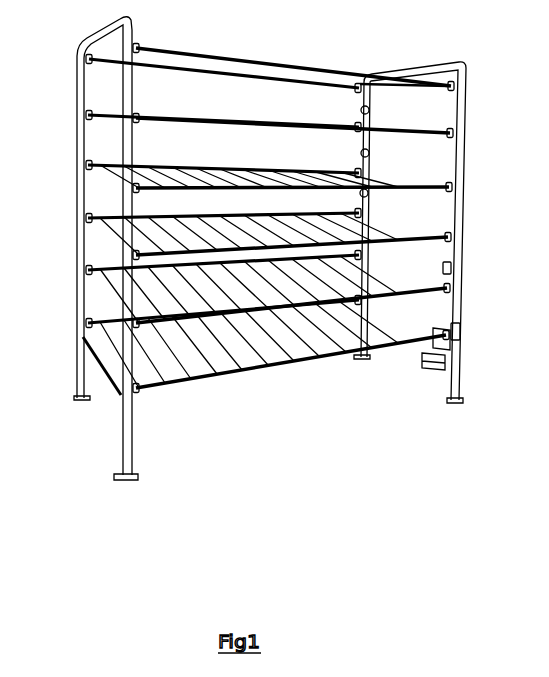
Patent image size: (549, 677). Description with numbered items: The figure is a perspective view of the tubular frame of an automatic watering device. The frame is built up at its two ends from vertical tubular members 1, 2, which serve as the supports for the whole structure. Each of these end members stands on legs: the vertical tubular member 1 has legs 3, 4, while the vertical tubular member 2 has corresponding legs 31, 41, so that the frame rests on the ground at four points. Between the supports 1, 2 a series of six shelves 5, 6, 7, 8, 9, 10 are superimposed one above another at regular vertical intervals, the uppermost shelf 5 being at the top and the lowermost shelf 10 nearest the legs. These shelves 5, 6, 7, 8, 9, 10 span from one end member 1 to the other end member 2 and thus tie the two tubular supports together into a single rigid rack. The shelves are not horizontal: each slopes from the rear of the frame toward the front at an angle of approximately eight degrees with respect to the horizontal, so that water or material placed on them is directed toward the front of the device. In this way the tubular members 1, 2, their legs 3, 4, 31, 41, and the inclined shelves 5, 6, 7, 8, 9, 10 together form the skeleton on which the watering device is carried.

The vertical tubular member 1 is at (120, 210).
The vertical tubular member 2 is at (463, 212).
The leg 3 is at (118, 480).
The leg 31 is at (458, 402).
The leg 4 is at (78, 399).
The leg 41 is at (363, 359).
The shelf 5 is at (438, 82).
The shelf 6 is at (440, 130).
The shelf 7 is at (443, 185).
The shelf 8 is at (457, 233).
The shelf 9 is at (451, 270).
The shelf 10 is at (458, 326).